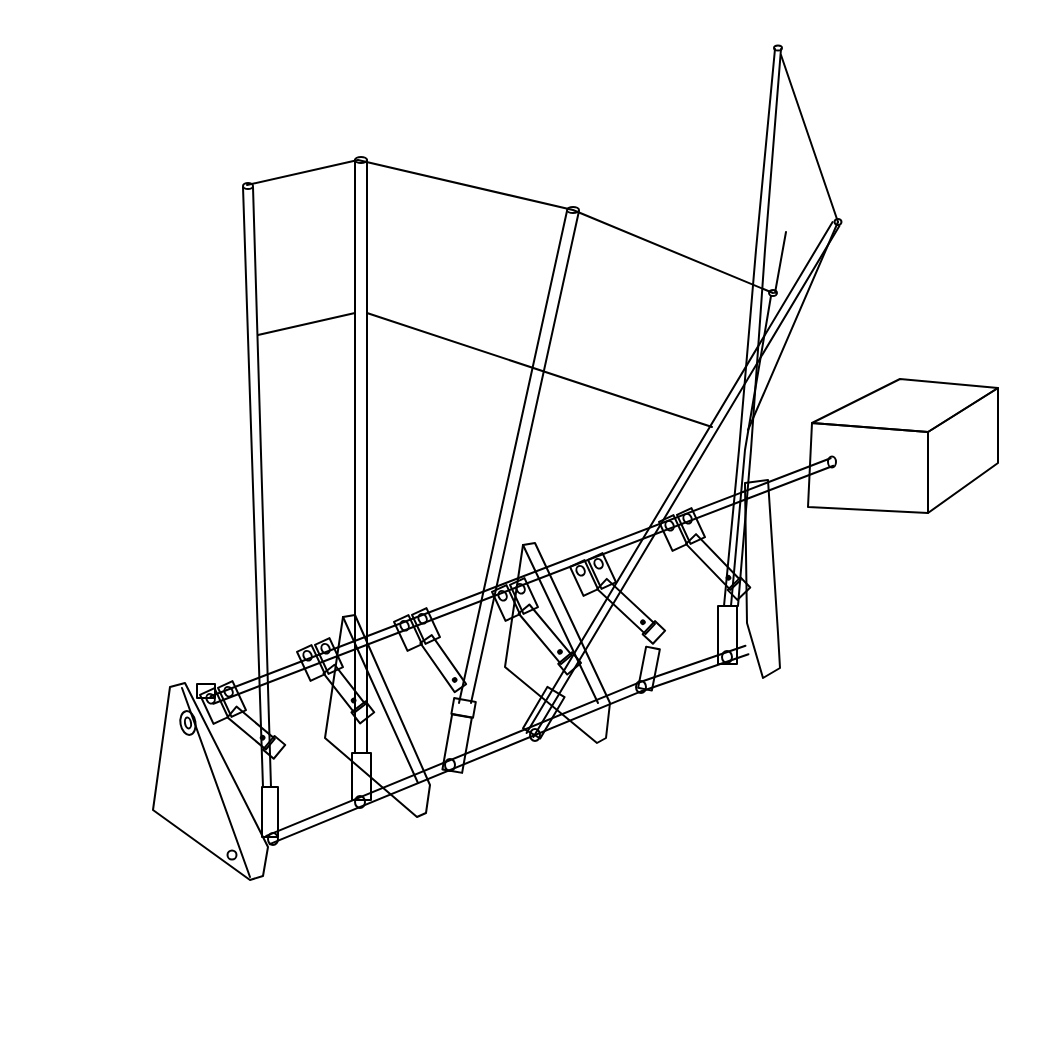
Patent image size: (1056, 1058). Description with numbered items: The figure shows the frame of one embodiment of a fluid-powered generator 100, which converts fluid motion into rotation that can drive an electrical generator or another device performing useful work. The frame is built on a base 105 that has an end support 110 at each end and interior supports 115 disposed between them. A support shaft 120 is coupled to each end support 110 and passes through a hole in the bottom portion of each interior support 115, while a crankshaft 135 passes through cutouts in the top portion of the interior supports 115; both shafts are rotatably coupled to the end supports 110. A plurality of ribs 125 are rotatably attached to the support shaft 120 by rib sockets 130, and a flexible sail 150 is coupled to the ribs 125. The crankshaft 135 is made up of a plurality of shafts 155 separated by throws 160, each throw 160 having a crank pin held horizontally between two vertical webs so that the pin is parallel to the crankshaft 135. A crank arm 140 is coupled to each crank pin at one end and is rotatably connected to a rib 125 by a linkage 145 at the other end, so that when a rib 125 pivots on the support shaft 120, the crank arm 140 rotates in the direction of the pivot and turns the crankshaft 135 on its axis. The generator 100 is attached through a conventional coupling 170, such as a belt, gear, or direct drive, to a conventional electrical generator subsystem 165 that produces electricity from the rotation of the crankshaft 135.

The fluid-powered generator 100 is at (555, 506).
The base 105 is at (595, 793).
The end support 110 is at (168, 850).
The interior support 115 is at (405, 821).
The support shaft 120 is at (686, 690).
The rib 125 is at (238, 482).
The rib socket 130 is at (547, 743).
The crankshaft 135 is at (606, 508).
The crank arm 140 is at (332, 660).
The linkage 145 is at (458, 704).
The flexible sail 150 is at (838, 195).
The shaft 155 is at (448, 600).
The throw 160 is at (564, 548).
The electrical generator subsystem 165 is at (931, 378).
The coupling 170 is at (781, 518).